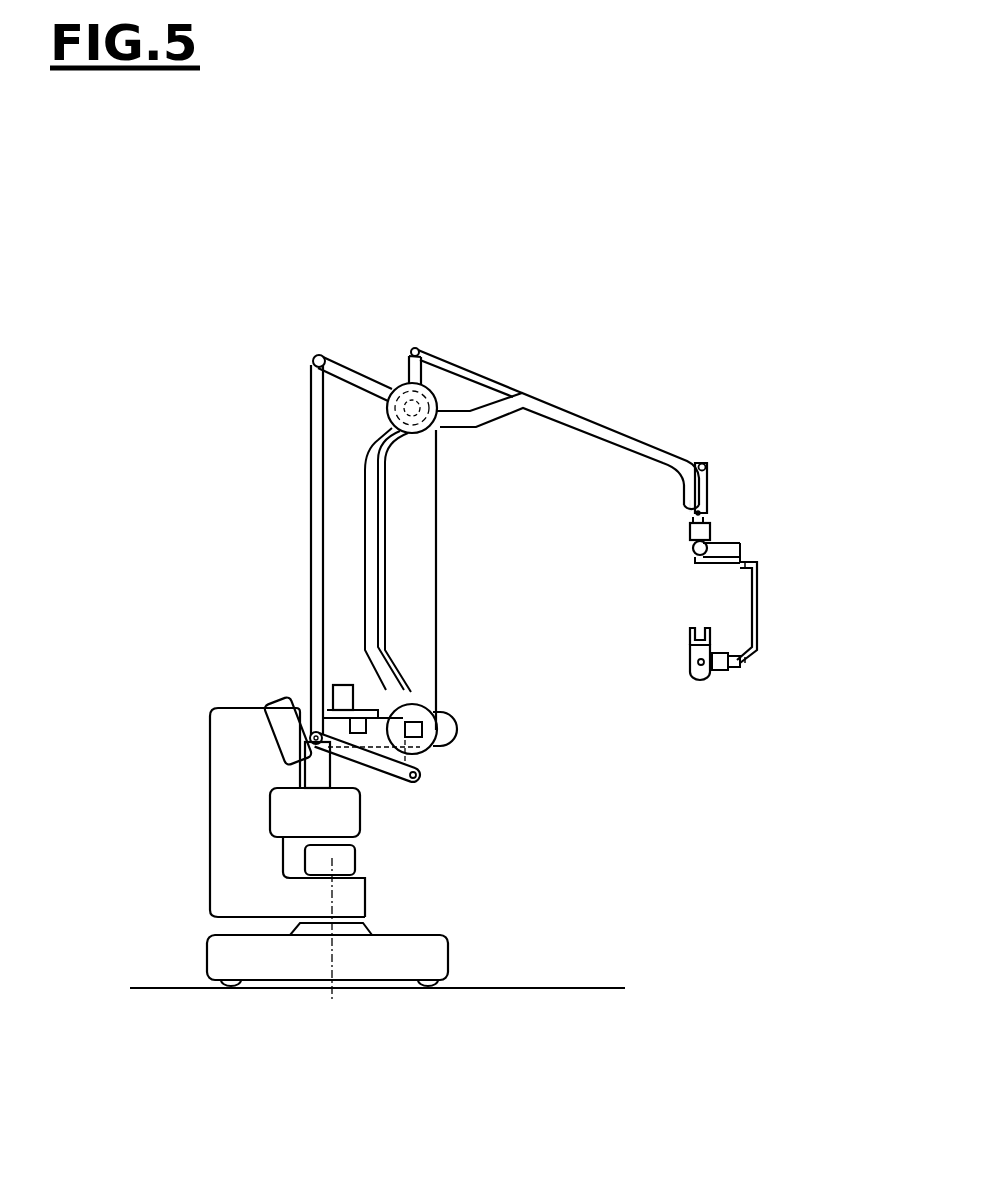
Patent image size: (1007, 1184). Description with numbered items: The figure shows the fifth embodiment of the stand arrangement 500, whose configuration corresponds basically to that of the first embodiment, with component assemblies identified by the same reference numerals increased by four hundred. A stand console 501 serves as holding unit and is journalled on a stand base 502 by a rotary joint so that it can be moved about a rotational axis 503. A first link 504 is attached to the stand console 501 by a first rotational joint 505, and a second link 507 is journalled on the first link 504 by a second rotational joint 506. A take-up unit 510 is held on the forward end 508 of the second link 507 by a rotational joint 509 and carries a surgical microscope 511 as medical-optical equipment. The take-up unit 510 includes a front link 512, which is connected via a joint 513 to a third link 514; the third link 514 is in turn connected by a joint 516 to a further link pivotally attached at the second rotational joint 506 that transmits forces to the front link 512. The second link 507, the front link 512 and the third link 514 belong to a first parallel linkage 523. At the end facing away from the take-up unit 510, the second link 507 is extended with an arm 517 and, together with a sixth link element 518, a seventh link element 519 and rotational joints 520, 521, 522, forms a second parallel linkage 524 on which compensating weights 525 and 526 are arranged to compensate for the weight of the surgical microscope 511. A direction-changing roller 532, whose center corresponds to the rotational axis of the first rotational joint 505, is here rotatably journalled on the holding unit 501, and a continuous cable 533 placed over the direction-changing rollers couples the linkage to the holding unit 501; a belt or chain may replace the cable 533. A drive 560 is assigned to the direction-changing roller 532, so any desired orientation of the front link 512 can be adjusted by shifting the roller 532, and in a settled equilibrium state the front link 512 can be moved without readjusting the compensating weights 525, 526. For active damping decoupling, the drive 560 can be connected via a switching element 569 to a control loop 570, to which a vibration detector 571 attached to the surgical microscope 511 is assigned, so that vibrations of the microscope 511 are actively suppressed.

The stand arrangement 500 is at (158, 552).
The stand console 501 is at (228, 782).
The stand base 502 is at (435, 960).
The rotational axis 503 is at (333, 898).
The first link 504 is at (373, 543).
The first rotational joint 505 is at (457, 727).
The second rotational joint 506 is at (398, 408).
The second link 507 is at (617, 428).
The forward end 508 is at (660, 489).
The rotational joint 509 is at (712, 530).
The take-up unit 510 is at (676, 528).
The surgical microscope 511 is at (702, 694).
The front link 512 is at (712, 484).
The joint 513 is at (705, 463).
The third link 514 is at (490, 383).
The joint 516 is at (425, 350).
The arm 517 is at (353, 370).
The sixth link element 518 is at (318, 488).
The seventh link element 519 is at (400, 790).
The rotational joint 520 is at (315, 356).
The rotational joint 521 is at (305, 735).
The rotational joint 522 is at (425, 772).
The first parallel linkage 523 is at (458, 385).
The second parallel linkage 524 is at (372, 518).
The compensating weight 525 is at (287, 698).
The compensating weight 526 is at (280, 815).
The direction-changing roller 532 is at (453, 737).
The continuous cable 533 is at (383, 602).
The drive 560 is at (433, 705).
The switching element 569 is at (362, 716).
The control loop 570 is at (340, 687).
The vibration detector 571 is at (688, 662).